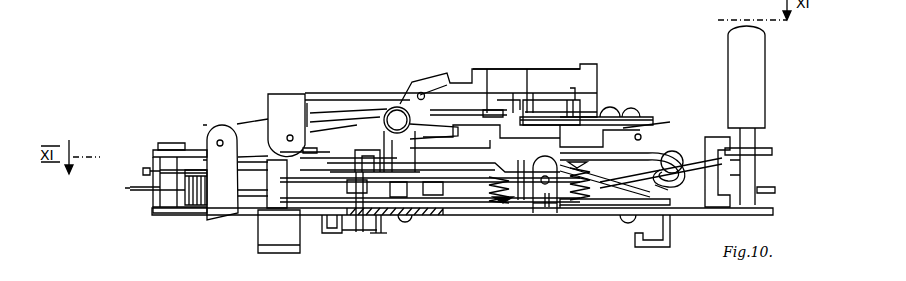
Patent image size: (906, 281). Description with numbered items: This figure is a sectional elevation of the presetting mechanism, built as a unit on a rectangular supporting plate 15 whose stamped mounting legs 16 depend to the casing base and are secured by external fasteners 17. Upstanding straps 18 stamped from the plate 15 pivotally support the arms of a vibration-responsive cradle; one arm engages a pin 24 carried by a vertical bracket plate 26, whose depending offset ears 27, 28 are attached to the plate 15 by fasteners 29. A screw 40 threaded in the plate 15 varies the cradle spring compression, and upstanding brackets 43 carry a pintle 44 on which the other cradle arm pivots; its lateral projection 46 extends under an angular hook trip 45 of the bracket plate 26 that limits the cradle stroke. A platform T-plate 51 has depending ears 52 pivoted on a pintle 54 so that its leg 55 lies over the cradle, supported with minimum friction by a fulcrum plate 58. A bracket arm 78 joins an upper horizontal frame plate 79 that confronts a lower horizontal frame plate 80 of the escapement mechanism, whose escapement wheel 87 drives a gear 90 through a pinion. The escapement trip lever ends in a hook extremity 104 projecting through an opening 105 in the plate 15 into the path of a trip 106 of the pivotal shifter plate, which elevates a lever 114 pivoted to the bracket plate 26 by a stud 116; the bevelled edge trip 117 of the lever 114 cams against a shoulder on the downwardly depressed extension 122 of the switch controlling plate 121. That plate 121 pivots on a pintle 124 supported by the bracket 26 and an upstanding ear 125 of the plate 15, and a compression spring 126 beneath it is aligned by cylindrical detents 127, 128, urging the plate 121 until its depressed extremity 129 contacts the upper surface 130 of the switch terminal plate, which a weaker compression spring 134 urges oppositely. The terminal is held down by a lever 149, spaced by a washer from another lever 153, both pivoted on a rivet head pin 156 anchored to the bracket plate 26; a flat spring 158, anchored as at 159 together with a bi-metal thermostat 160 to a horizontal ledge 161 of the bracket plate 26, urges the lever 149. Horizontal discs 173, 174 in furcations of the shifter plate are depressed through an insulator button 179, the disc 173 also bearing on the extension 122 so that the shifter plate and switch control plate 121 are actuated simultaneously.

The supporting plate 15 is at (539, 221).
The mounting legs 16 is at (267, 230).
The external fasteners 17 is at (201, 275).
The upstanding straps 18 is at (222, 207).
The pin 24 is at (642, 135).
The vertical bracket plate 26 is at (530, 137).
The depending offset ear 27 is at (615, 205).
The depending offset ear 28 is at (387, 220).
The fasteners 29 is at (417, 224).
The screw 40 is at (252, 133).
The upstanding brackets 43 is at (213, 168).
The pintle 44 is at (219, 141).
The angular hook trip 45 is at (512, 103).
The projection 46 is at (499, 110).
The platform T-plate 51 is at (335, 93).
The depending ears 52 is at (284, 107).
The pintle 54 is at (293, 138).
The leg 55 is at (585, 90).
The fulcrum plate 58 is at (580, 107).
The arm 78 is at (167, 157).
The upper horizontal frame plate 79 is at (165, 150).
The lower horizontal frame plate 80 is at (178, 213).
The escapement wheel 87 is at (130, 188).
The gear 90 is at (148, 169).
The hook extremity 104 is at (342, 233).
The opening 105 is at (380, 232).
The trip 106 is at (360, 234).
The lever 114 is at (647, 151).
The pivot stud 116 is at (718, 97).
The bevelled edge trip 117 is at (666, 180).
The switch controlling plate 121 is at (635, 137).
The downwardly depressed extension 122 is at (740, 167).
The pintle 124 is at (545, 176).
The upstanding ear 125 is at (550, 206).
The compression spring 126 is at (590, 182).
The cylindrical detent 127 is at (585, 208).
The cylindrical detent 128 is at (605, 163).
The depressed extremity 129 is at (487, 172).
The upper surface 130 is at (520, 200).
The compression spring 134 is at (510, 182).
The lever 149 is at (400, 150).
The lever 153 is at (419, 90).
The rivet head pin 156 is at (397, 118).
The flat spring 158 is at (527, 140).
The anchorage 159 is at (628, 113).
The bi-metal thermostat 160 is at (580, 70).
The horizontal ledge 161 is at (625, 110).
The horizontal disc 173 is at (773, 150).
The horizontal disc 174 is at (775, 190).
The insulator button 179 is at (753, 62).